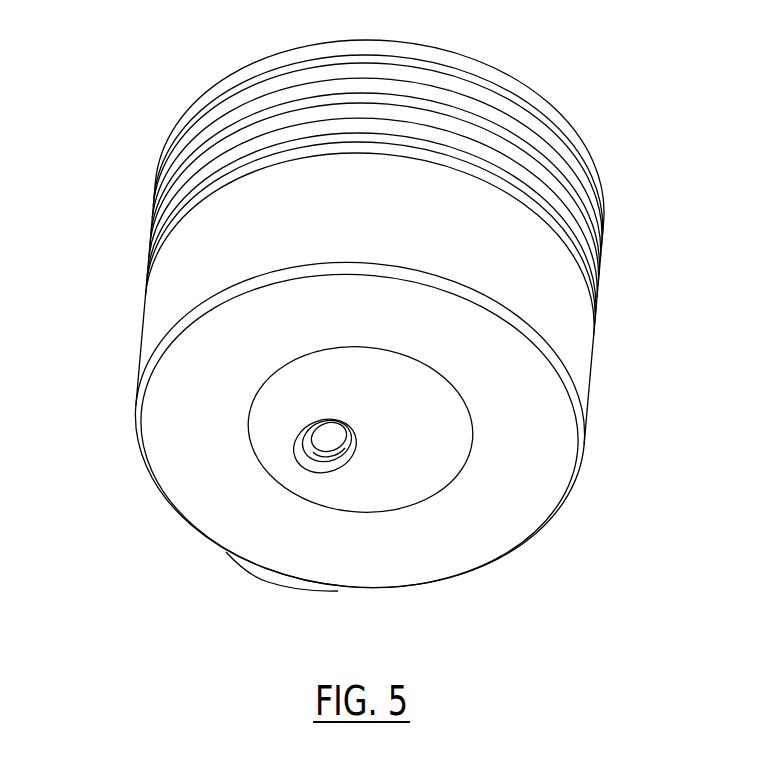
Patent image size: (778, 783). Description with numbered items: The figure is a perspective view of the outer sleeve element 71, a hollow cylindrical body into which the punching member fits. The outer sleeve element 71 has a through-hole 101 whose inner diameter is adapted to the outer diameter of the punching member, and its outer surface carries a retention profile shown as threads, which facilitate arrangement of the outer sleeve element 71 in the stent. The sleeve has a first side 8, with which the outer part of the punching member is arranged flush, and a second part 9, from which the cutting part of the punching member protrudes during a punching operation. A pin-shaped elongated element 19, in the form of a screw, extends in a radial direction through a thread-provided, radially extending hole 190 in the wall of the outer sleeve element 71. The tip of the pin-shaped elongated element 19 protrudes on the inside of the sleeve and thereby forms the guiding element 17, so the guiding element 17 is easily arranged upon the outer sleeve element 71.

The first side 8 is at (517, 518).
The second part 9 is at (587, 124).
The guiding element 17 is at (328, 443).
The pin-shaped elongated element 19 is at (266, 580).
The outer sleeve element 71 is at (652, 336).
The through-hole 101 is at (435, 447).
The hole 190 is at (303, 429).